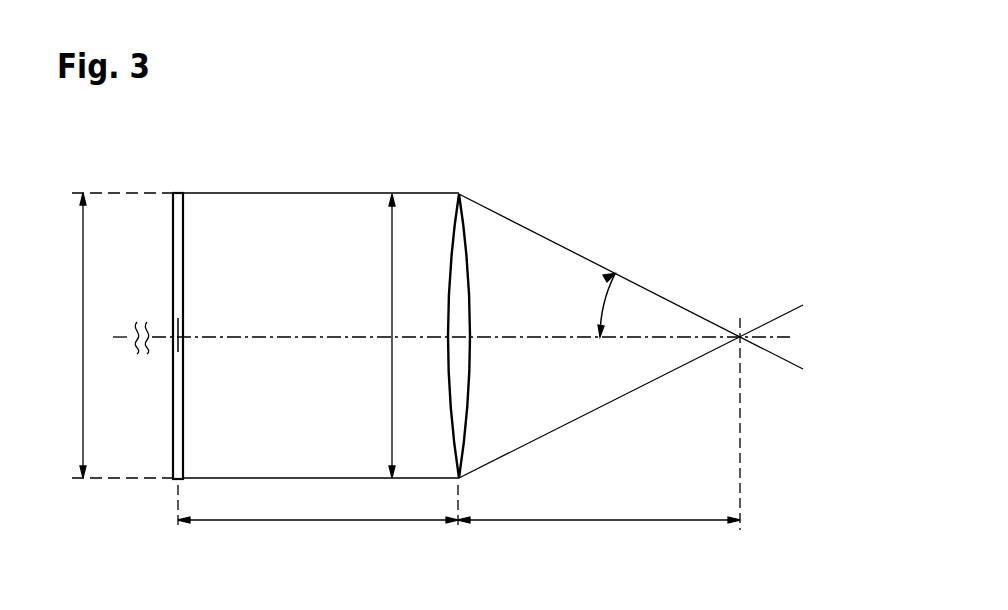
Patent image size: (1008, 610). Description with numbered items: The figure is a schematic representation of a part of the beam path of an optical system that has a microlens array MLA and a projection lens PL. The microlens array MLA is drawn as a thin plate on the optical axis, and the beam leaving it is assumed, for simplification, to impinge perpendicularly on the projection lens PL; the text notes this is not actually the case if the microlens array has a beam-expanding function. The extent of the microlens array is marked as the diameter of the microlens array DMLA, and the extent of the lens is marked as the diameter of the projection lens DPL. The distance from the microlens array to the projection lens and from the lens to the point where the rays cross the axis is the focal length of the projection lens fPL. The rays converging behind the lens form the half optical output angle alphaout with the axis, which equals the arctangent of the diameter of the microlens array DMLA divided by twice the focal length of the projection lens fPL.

The microlens array MLA is at (180, 193).
The projection lens PL is at (460, 194).
The diameter of the microlens array DMLA is at (51, 335).
The diameter of the projection lens DPL is at (368, 336).
The half optical output angle alphaout is at (581, 306).
The focal length of the projection lens fPL is at (459, 524).